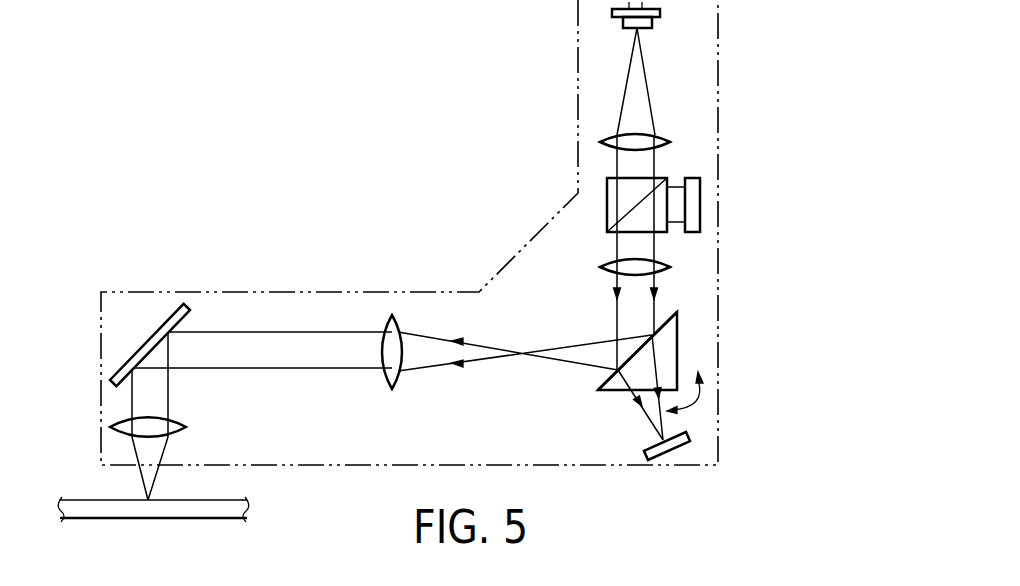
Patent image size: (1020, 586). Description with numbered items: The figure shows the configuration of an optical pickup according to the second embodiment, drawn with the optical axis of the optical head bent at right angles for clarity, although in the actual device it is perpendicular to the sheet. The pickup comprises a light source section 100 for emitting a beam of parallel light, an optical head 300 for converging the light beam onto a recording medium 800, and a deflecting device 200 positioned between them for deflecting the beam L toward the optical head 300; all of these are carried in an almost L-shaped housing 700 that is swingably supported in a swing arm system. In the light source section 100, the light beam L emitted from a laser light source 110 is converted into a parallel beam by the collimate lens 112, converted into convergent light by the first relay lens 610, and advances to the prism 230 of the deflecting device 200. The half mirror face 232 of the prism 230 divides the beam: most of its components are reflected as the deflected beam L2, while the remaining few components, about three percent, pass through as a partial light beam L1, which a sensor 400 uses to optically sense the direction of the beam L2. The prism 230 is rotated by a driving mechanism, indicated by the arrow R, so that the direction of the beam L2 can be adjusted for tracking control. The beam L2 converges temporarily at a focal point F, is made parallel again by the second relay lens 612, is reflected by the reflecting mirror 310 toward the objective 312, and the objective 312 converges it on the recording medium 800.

The light source section 100 is at (593, 73).
The laser light source 110 is at (652, 27).
The collimate lens 112 is at (660, 137).
The first relay lens 610 is at (604, 265).
The optical element 230 is at (688, 308).
The half mirror face 232 is at (596, 388).
The deflecting device 200 is at (594, 409).
The sensor 400 is at (664, 460).
The second relay lens 612 is at (399, 381).
The housing 700 is at (307, 292).
The optical head 300 is at (109, 400).
The reflecting mirror 310 is at (144, 339).
The objective 312 is at (168, 417).
The recording medium 800 is at (215, 519).
The light beam L is at (613, 284).
The partial light beam L1 is at (648, 425).
The deflected beam L2 is at (272, 331).
The focal point F is at (532, 351).
The rotation direction R is at (687, 402).